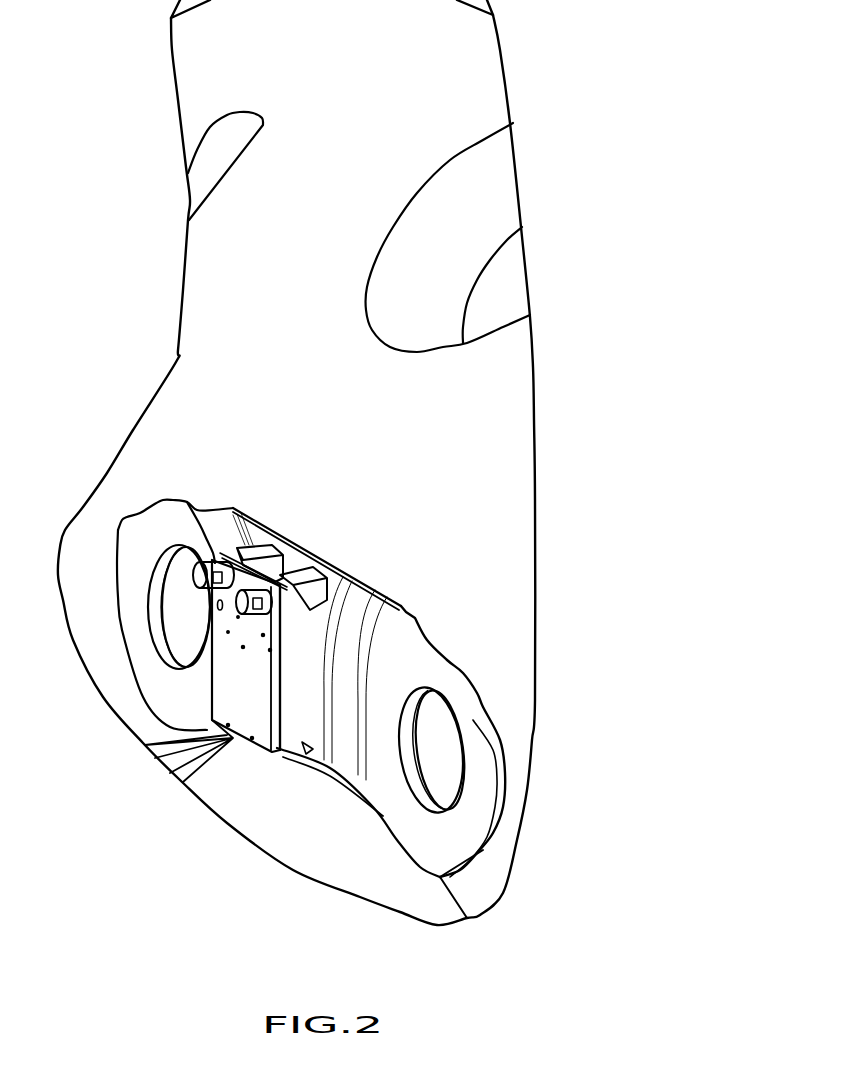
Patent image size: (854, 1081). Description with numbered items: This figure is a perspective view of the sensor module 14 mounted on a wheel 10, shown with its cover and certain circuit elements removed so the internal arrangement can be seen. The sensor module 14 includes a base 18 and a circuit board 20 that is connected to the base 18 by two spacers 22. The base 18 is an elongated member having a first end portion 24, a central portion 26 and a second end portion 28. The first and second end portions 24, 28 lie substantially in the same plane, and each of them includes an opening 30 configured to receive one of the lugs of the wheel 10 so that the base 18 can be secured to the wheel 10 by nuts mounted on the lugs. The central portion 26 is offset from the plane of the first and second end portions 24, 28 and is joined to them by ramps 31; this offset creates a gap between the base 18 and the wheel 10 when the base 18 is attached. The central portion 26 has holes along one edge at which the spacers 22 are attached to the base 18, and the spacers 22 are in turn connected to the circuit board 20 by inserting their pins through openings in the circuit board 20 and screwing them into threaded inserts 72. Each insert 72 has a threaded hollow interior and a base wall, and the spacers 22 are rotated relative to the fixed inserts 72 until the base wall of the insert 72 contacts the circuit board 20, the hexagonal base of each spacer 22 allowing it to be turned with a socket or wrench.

The wheel 10 is at (467, 62).
The sensor module 14 is at (296, 629).
The base 18 is at (413, 620).
The circuit board 20 is at (247, 710).
The spacers 22 is at (260, 551).
The first end portion 24 is at (135, 538).
The central portion 26 is at (307, 637).
The second end portion 28 is at (463, 832).
The opening 30 is at (157, 607).
The ramps 31 is at (358, 610).
The threaded inserts 72 is at (212, 563).